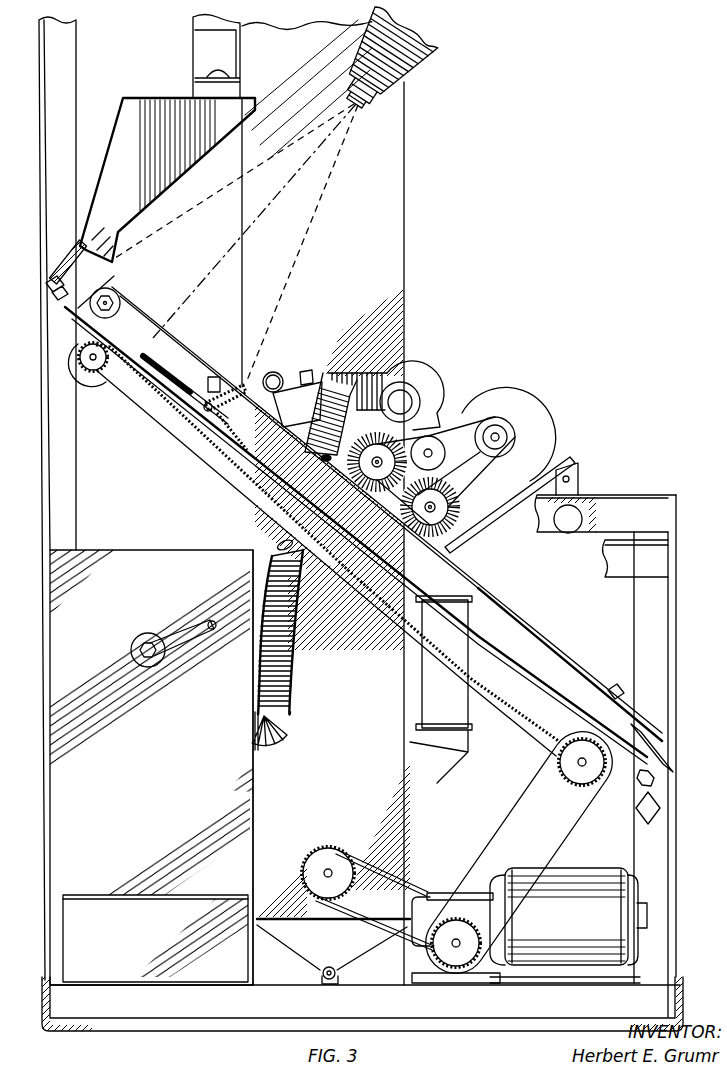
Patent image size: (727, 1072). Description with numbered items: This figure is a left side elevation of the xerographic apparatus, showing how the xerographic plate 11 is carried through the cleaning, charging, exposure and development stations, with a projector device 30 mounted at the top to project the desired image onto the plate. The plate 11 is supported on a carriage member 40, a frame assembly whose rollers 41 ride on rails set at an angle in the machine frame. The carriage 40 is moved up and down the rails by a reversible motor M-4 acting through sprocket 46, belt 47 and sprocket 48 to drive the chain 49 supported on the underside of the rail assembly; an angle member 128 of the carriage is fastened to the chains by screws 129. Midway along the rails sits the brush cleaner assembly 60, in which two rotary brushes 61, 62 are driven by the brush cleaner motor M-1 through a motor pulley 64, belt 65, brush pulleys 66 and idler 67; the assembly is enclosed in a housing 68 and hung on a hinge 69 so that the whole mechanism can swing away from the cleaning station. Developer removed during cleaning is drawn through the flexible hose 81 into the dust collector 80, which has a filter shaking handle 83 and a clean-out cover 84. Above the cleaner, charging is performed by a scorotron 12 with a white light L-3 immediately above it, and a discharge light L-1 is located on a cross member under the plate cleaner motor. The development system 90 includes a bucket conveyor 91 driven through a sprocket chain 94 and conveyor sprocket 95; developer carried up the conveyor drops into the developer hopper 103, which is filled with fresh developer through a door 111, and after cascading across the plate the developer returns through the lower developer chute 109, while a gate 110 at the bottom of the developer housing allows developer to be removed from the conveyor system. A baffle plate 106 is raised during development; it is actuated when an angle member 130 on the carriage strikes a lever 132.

The developer hopper 103 is at (147, 99).
The door 111 is at (225, 78).
The projector device 30 is at (410, 68).
The development system 90 is at (420, 190).
The bucket conveyor 91 is at (404, 262).
The rollers 41 is at (111, 290).
The carriage member 40 is at (158, 308).
The screws 129 is at (162, 343).
The xerographic plate 11 is at (196, 356).
The lever 132 is at (214, 376).
The baffle plate 106 is at (273, 374).
The white light L-3 is at (303, 369).
The scorotron 12 is at (312, 380).
The angle member 130 is at (247, 398).
The angle member 128 is at (114, 385).
The brush cleaner assembly 60 is at (413, 368).
The housing 68 is at (415, 385).
The idler 67 is at (431, 436).
The belt 65 is at (472, 410).
The motor pulley 64 is at (502, 428).
The brush cleaner motor M-1 is at (531, 415).
The hinge 69 is at (580, 475).
The discharge light L-1 is at (568, 534).
The brush pulleys 66 is at (352, 480).
The rotary brush 62 is at (378, 502).
The rotary brush 61 is at (442, 537).
The filter shaking handle 83 is at (177, 632).
The dust collector 80 is at (204, 733).
The flexible hose 81 is at (292, 716).
The chain 49 is at (392, 616).
The lower developer chute 109 is at (470, 723).
The sprocket 48 is at (568, 782).
The belt 47 is at (505, 842).
The reversible motor M-4 is at (592, 868).
The conveyor sprocket 95 is at (333, 848).
The sprocket chain 94 is at (417, 892).
The sprocket 46 is at (426, 955).
The gate 110 is at (321, 972).
The clean-out cover 84 is at (207, 900).